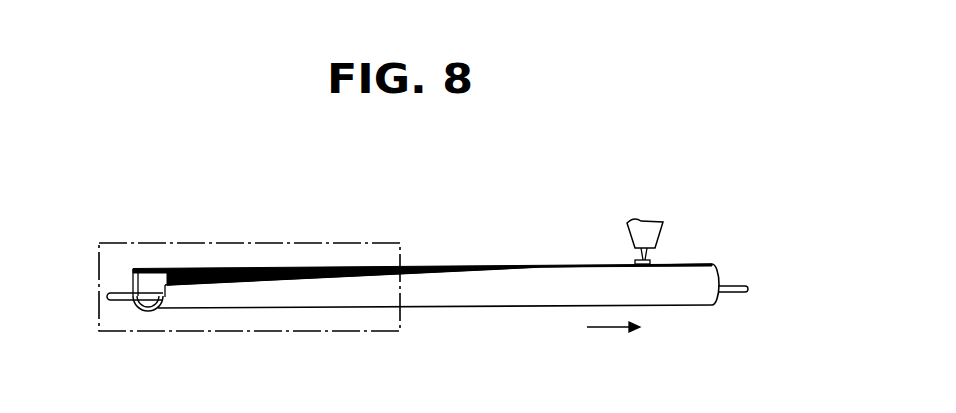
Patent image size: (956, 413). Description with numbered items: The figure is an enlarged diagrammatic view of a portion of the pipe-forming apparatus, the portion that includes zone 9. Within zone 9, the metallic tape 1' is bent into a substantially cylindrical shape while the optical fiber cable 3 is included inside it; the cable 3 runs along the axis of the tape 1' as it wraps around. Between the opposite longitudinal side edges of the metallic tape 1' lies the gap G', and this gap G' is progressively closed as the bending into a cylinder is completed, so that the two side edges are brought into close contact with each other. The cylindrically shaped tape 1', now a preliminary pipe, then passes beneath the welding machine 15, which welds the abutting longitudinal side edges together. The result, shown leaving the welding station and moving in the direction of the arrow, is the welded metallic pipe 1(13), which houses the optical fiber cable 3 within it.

The welded metallic pipe 1 is at (476, 271).
The welded metallic pipe 13 is at (693, 282).
The metallic tape 1' is at (185, 233).
The optical fiber cable 3 is at (118, 294).
The zone 9 is at (272, 333).
The welding machine 15 is at (649, 233).
The gap G' is at (422, 236).